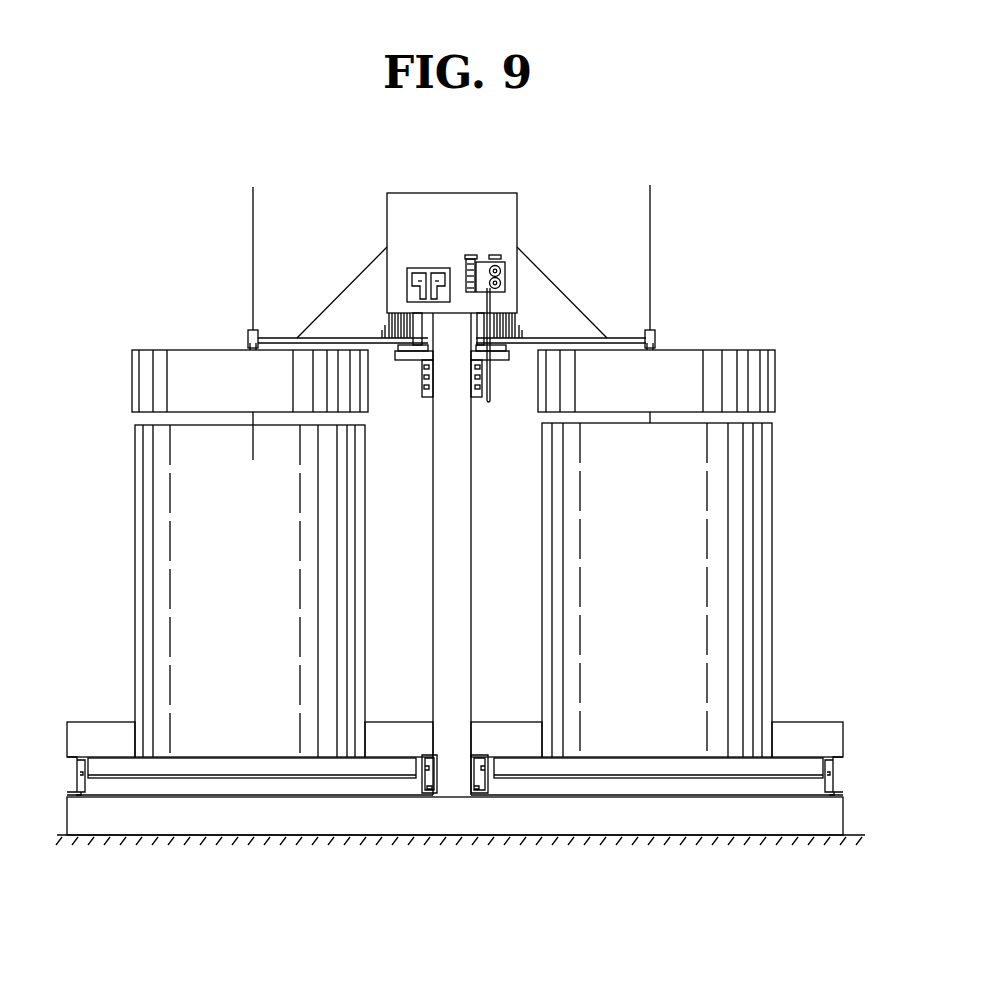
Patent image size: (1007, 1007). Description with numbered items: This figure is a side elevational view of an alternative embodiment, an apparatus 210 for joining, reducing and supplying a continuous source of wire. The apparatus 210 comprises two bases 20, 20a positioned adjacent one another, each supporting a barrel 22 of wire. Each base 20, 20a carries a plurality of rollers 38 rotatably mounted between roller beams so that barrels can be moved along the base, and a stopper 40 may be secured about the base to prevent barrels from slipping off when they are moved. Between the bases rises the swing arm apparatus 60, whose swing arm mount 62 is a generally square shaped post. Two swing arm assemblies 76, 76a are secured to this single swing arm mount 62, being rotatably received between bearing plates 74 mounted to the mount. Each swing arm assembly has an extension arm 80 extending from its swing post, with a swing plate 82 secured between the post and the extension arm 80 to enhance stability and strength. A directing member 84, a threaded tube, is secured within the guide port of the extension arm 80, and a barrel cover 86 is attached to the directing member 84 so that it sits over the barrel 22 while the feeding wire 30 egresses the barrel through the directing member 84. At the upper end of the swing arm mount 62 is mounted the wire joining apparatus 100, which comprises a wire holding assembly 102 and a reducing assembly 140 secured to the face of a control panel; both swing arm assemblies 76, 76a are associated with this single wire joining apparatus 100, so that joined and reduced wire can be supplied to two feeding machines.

The apparatus 210 is at (222, 108).
The wire joining apparatus 100 is at (405, 250).
The wire holding assembly 102 is at (428, 262).
The reducing assembly 140 is at (486, 255).
The swing arm apparatus 60 is at (305, 225).
The swing plate 82 is at (330, 293).
The feeding wire 30 is at (250, 265).
The swing arm assembly 76 is at (597, 300).
The second swing arm assembly 76a is at (327, 293).
The extension arm 80 is at (504, 310).
The directing member 84 is at (663, 336).
The barrel cover 86 is at (132, 380).
The bearing plates 74 is at (397, 352).
The swing arm mount 62 is at (484, 548).
The barrel 22 is at (135, 483).
The stopper 40 is at (385, 718).
The rollers 38 is at (258, 780).
The base 20 is at (840, 770).
The second base 20a is at (58, 772).